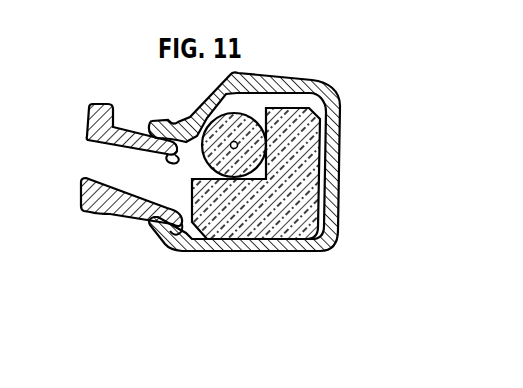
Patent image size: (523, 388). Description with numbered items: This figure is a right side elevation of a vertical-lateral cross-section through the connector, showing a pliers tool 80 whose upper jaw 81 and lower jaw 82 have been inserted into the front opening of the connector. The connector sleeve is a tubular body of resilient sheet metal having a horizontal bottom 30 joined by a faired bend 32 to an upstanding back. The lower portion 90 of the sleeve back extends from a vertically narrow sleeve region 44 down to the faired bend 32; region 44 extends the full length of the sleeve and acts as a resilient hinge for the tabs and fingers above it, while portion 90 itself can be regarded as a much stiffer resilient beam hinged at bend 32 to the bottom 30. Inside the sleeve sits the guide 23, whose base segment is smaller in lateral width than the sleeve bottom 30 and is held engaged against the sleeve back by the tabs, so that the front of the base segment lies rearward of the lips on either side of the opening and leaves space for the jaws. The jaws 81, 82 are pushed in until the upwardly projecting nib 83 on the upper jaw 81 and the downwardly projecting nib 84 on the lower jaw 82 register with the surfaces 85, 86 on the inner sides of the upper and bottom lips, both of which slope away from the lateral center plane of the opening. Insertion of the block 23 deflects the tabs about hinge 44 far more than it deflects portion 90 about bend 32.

The pliers tool 80 is at (84, 110).
The upper jaw 81 is at (134, 134).
The lower jaw 82 is at (137, 216).
The upwardly projecting nib 83 is at (169, 162).
The downwardly projecting nib 84 is at (186, 210).
The surface 85 is at (232, 97).
The surface 86 is at (193, 251).
The portion of sleeve back 90 is at (339, 212).
The sleeve region 44 is at (340, 168).
The bottom 30 is at (253, 243).
The faired bend 32 is at (330, 247).
The guide 23 is at (295, 230).